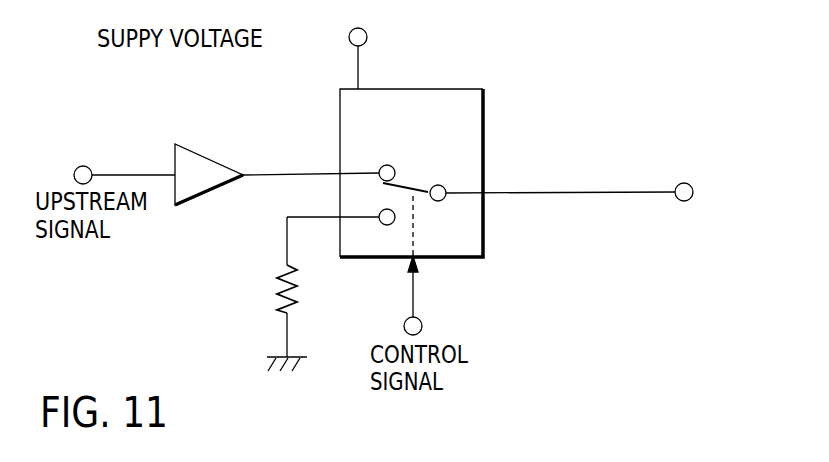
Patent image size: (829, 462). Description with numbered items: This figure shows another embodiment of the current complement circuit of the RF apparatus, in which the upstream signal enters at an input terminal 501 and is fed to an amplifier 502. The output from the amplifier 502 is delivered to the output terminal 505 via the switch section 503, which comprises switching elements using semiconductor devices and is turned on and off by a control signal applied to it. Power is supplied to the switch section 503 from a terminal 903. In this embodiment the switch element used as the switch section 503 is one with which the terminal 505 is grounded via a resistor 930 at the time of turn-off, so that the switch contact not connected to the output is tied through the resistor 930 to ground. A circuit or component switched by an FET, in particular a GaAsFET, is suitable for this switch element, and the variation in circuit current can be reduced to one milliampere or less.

The upstream signal input terminal 501 is at (88, 167).
The amplifier 502 is at (190, 145).
The switch section 503 is at (471, 88).
The output terminal 505 is at (680, 183).
The power supply terminal 903 is at (349, 37).
The resistor 930 is at (305, 296).